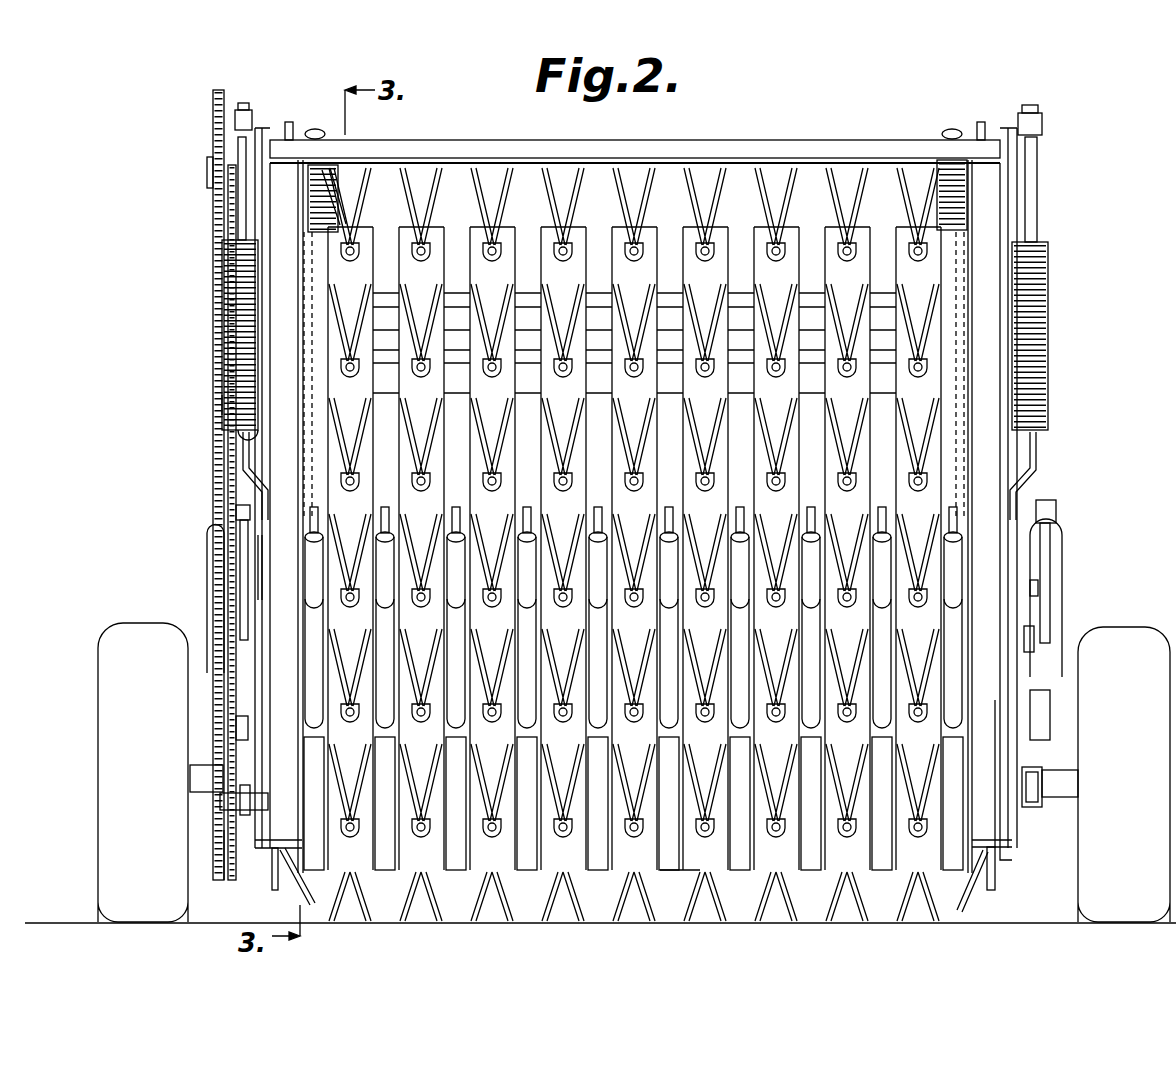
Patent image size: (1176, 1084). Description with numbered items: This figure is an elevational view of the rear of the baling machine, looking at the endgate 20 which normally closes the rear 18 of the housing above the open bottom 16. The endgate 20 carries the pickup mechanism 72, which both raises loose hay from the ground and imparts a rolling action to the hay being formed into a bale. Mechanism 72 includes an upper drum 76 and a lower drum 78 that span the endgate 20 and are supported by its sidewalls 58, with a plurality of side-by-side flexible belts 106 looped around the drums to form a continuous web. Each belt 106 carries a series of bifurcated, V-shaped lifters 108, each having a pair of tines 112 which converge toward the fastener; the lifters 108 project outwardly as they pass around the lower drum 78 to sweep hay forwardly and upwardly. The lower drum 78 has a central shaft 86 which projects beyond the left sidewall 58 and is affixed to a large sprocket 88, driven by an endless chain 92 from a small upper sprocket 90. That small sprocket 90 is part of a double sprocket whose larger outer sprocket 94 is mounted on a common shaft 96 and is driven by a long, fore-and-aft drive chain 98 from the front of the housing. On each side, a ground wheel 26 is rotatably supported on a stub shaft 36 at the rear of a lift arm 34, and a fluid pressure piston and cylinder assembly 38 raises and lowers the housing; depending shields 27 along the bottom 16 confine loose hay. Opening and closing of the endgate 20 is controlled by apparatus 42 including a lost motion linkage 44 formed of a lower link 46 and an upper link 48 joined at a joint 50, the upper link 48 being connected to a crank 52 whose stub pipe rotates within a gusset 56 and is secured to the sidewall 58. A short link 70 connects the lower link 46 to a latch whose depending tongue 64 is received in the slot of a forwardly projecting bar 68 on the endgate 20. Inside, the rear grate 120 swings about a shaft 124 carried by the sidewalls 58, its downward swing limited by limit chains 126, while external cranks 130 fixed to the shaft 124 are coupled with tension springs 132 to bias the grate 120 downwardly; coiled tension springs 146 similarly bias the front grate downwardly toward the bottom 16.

The bottom 16 is at (1127, 618).
The rear 18 is at (1008, 850).
The endgate 20 is at (626, 140).
The ground wheels 26 is at (125, 627).
The shields 27 is at (308, 905).
The lift arms 34 is at (252, 772).
The stub shafts 36 is at (190, 782).
The fluid pressure piston and cylinder assembly 38 is at (212, 553).
The apparatus 42 is at (224, 586).
The lost motion linkage 44 is at (1042, 588).
The lower link 46 is at (236, 732).
The upper link 48 is at (240, 536).
The joint 50 is at (1040, 632).
The crank 52 is at (244, 108).
The gusset 56 is at (263, 130).
The sidewall of endgate 58 is at (300, 283).
The tongue 64 is at (272, 882).
The bar 68 is at (262, 843).
The short link 70 is at (1000, 712).
The pickup mechanism 72 is at (740, 898).
The upper drum 76 is at (594, 230).
The lower drum 78 is at (690, 872).
The central shaft 86 is at (242, 800).
The large sprocket 88 is at (228, 866).
The small upper sprocket 90 is at (228, 200).
The endless chain 92 is at (238, 448).
The large outer sprocket 94 is at (212, 112).
The common shaft 96 is at (207, 172).
The drive chain 98 is at (222, 402).
The flexible belts 106 is at (358, 866).
The lifters 108 is at (398, 812).
The tines 112 is at (790, 185).
The rear grate 120 is at (680, 556).
The shaft 124 is at (258, 585).
The limit chains 126 is at (316, 378).
The external cranks 130 is at (243, 474).
The tension springs 132 is at (222, 340).
The coiled tension springs 146 is at (335, 195).